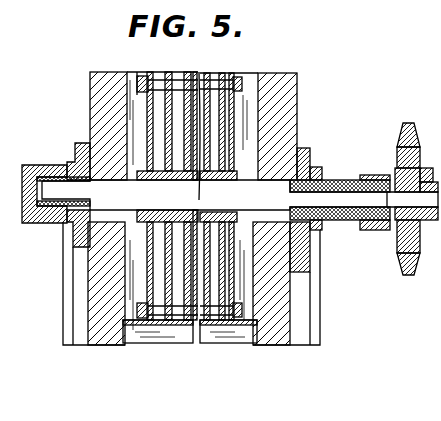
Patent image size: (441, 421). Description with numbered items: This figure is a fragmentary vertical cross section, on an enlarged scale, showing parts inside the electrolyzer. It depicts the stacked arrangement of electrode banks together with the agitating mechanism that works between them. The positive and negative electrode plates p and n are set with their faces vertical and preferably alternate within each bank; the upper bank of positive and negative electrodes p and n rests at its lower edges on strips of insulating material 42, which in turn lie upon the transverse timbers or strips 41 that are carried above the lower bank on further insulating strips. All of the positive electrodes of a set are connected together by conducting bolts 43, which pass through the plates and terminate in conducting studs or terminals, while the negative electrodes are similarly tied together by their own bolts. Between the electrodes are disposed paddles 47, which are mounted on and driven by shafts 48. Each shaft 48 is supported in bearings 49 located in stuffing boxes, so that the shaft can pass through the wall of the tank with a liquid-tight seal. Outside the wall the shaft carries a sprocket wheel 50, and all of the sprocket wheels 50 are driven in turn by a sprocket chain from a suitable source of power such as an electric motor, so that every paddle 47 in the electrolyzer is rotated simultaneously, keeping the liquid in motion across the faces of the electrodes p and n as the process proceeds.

The transverse timbers or strips 41 is at (153, 337).
The strips of insulating material 42 is at (218, 338).
The conducting bolts 43 is at (141, 70).
The paddles 47 is at (157, 157).
The shafts 48 is at (240, 196).
The bearings 49 is at (47, 190).
The sprocket wheels 50 is at (401, 133).
The positive electrode plates p is at (157, 73).
The negative electrode plates n is at (168, 72).